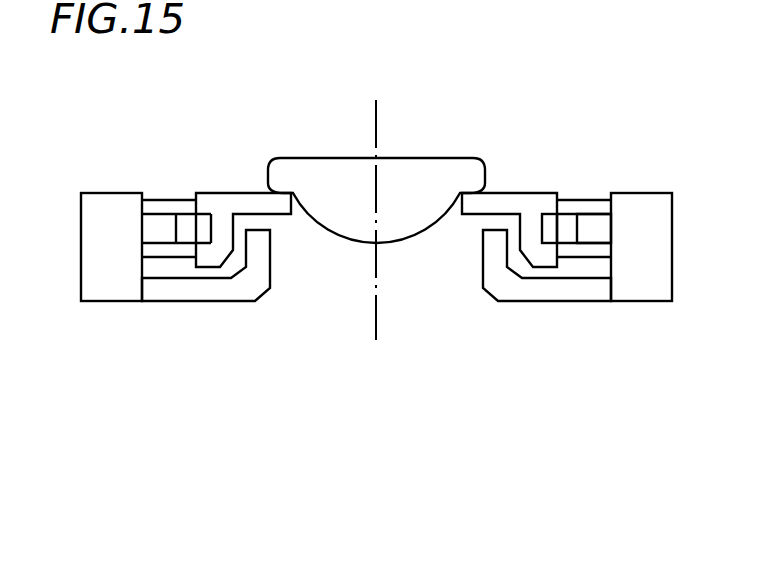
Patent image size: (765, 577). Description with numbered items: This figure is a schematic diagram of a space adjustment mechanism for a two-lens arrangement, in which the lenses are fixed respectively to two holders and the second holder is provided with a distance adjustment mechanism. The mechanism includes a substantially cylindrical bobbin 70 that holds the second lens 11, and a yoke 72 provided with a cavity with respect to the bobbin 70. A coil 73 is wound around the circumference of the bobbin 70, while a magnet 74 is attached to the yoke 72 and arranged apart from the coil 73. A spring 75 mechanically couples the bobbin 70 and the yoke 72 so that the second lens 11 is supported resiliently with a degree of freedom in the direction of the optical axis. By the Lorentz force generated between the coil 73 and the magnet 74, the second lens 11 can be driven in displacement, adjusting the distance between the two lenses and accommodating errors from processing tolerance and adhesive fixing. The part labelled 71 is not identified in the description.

The second lens 11 is at (435, 172).
The bobbin 70 is at (512, 202).
The holder 71 is at (488, 222).
The yoke 72 is at (647, 207).
The coil 73 is at (546, 224).
The magnet 74 is at (597, 233).
The spring 75 is at (587, 203).